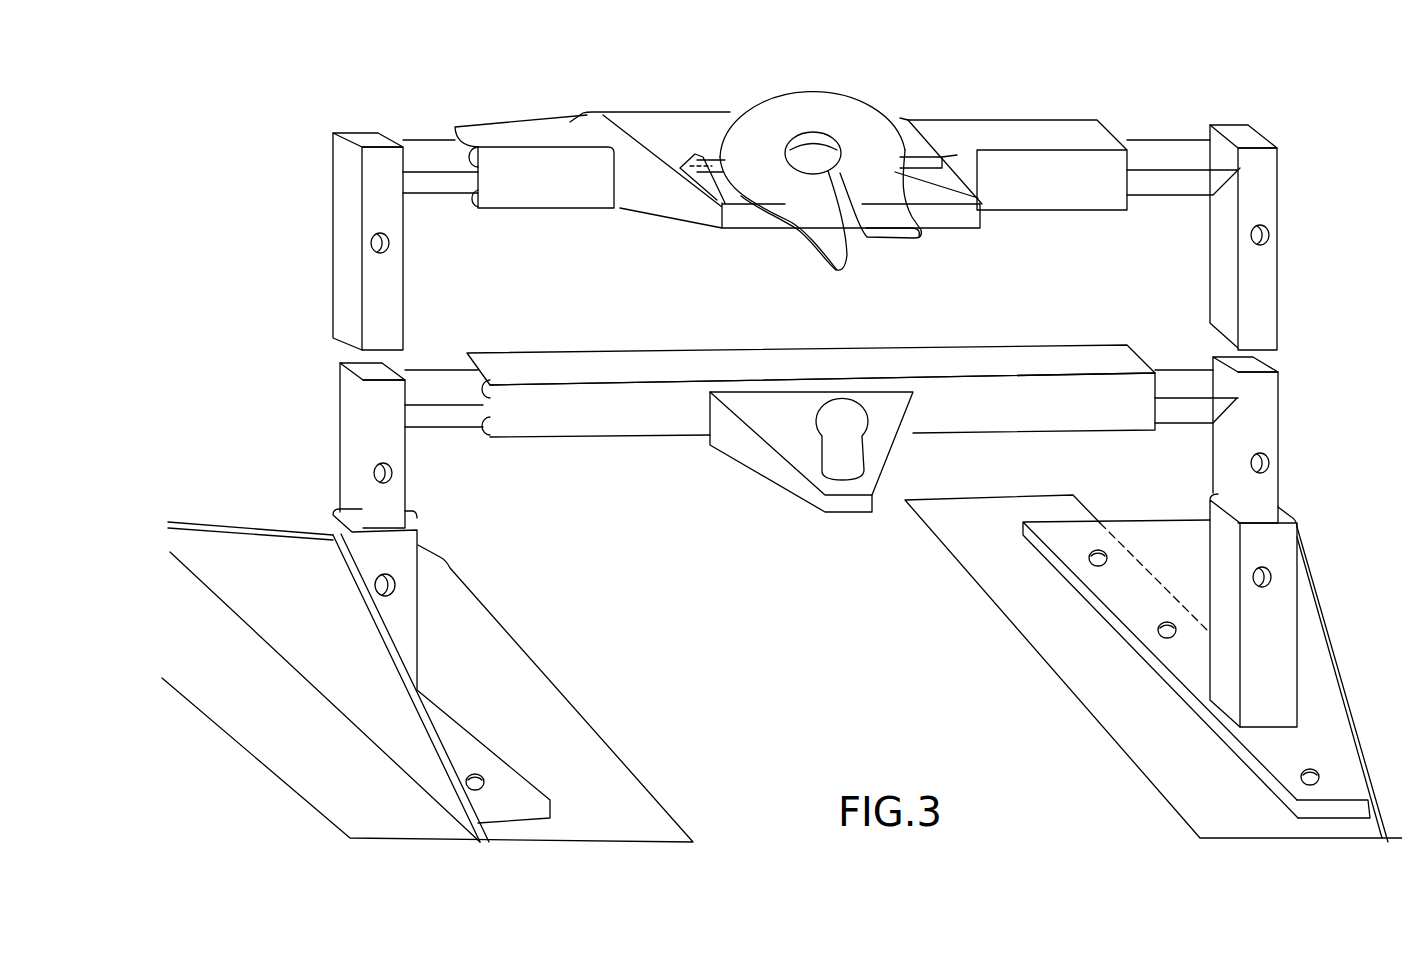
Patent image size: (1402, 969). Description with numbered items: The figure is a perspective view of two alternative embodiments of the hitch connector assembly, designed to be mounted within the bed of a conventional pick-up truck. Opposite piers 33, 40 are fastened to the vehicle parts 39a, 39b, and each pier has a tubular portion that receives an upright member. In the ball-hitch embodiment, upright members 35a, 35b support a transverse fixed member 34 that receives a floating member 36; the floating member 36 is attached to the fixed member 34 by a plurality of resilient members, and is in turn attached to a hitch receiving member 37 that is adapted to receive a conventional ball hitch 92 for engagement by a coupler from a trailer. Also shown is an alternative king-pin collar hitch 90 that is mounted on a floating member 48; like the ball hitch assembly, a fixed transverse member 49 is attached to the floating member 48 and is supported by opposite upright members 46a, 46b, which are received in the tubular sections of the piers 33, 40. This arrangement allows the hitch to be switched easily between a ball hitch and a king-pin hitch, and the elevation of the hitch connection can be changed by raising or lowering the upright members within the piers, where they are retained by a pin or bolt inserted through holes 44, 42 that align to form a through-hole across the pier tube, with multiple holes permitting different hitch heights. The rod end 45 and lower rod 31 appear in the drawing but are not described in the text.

The lower cross rod 31 is at (478, 437).
The pier 33 is at (465, 737).
The transverse fixed member 34 is at (447, 350).
The upright member 35a is at (345, 412).
The upright member 35b is at (1267, 433).
The floating member 36 is at (555, 433).
The hitch receiving member 37 is at (820, 483).
The vehicle part 39a is at (487, 640).
The vehicle part 39b is at (980, 557).
The pier 40 is at (1113, 598).
The hole 42 is at (1270, 457).
The hole 44 is at (1265, 572).
The rod end 45 is at (473, 205).
The upright member 46a is at (345, 232).
The upright member 46b is at (1272, 190).
The floating member 48 is at (497, 130).
The fixed transverse member 49 is at (420, 140).
The king-pin collar hitch 90 is at (847, 115).
The ball hitch 92 is at (850, 437).